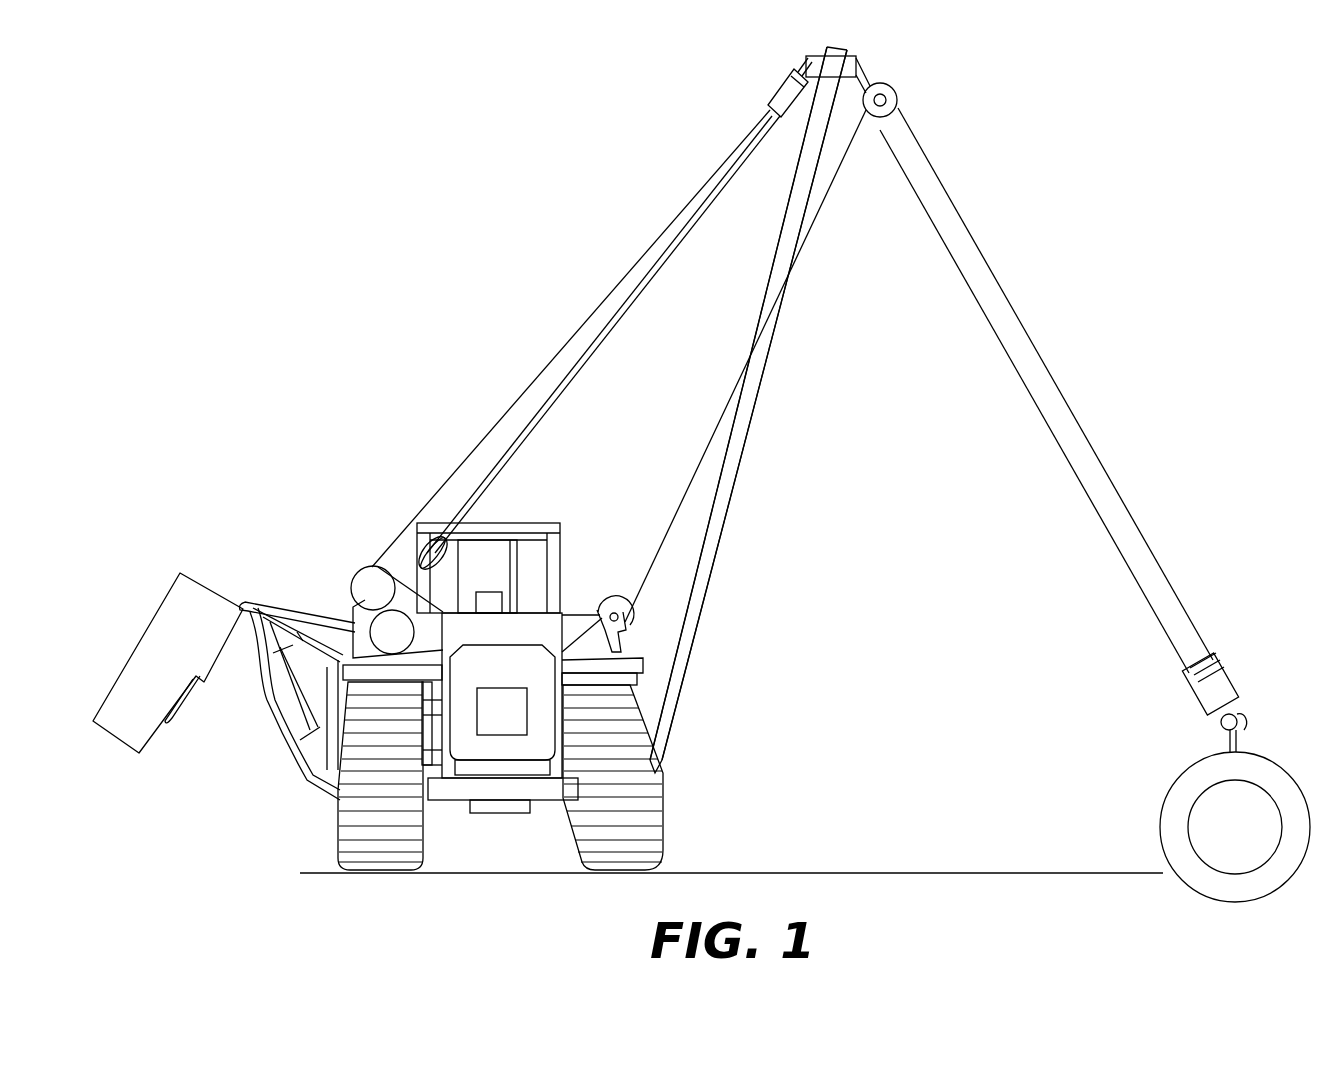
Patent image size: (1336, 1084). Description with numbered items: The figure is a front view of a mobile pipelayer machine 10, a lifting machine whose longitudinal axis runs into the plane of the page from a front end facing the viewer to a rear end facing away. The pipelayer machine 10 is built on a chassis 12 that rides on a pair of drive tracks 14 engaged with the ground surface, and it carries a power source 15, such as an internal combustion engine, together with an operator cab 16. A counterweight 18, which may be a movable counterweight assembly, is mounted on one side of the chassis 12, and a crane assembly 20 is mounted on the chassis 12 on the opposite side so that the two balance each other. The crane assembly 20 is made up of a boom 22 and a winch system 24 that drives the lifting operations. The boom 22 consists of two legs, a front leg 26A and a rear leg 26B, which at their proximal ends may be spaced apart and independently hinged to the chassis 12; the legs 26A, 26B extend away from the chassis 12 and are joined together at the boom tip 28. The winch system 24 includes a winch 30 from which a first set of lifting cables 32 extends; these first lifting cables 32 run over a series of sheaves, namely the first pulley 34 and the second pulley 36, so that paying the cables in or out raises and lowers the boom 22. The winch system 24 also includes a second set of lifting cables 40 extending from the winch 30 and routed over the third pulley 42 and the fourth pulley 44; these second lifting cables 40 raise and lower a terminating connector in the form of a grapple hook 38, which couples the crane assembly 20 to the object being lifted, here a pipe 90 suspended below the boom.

The pipelayer machine 10 is at (455, 296).
The chassis 12 is at (438, 792).
The drive tracks 14 is at (340, 835).
The power source 15 is at (516, 721).
The operator cab 16 is at (488, 552).
The counterweight 18 is at (150, 660).
The crane assembly 20 is at (681, 183).
The boom 22 is at (755, 372).
The winch system 24 is at (345, 518).
The front leg 26A is at (695, 608).
The rear leg 26B is at (690, 668).
The boom tip 28 is at (812, 62).
The winch 30 is at (375, 587).
The first set of lifting cables 32 is at (622, 306).
The first pulley 34 is at (780, 90).
The second pulley 36 is at (422, 512).
The grapple hook 38 is at (1240, 713).
The second set of lifting cables 40 is at (660, 553).
The third pulley 42 is at (891, 84).
The fourth pulley 44 is at (606, 607).
The pipe 90 is at (1163, 805).